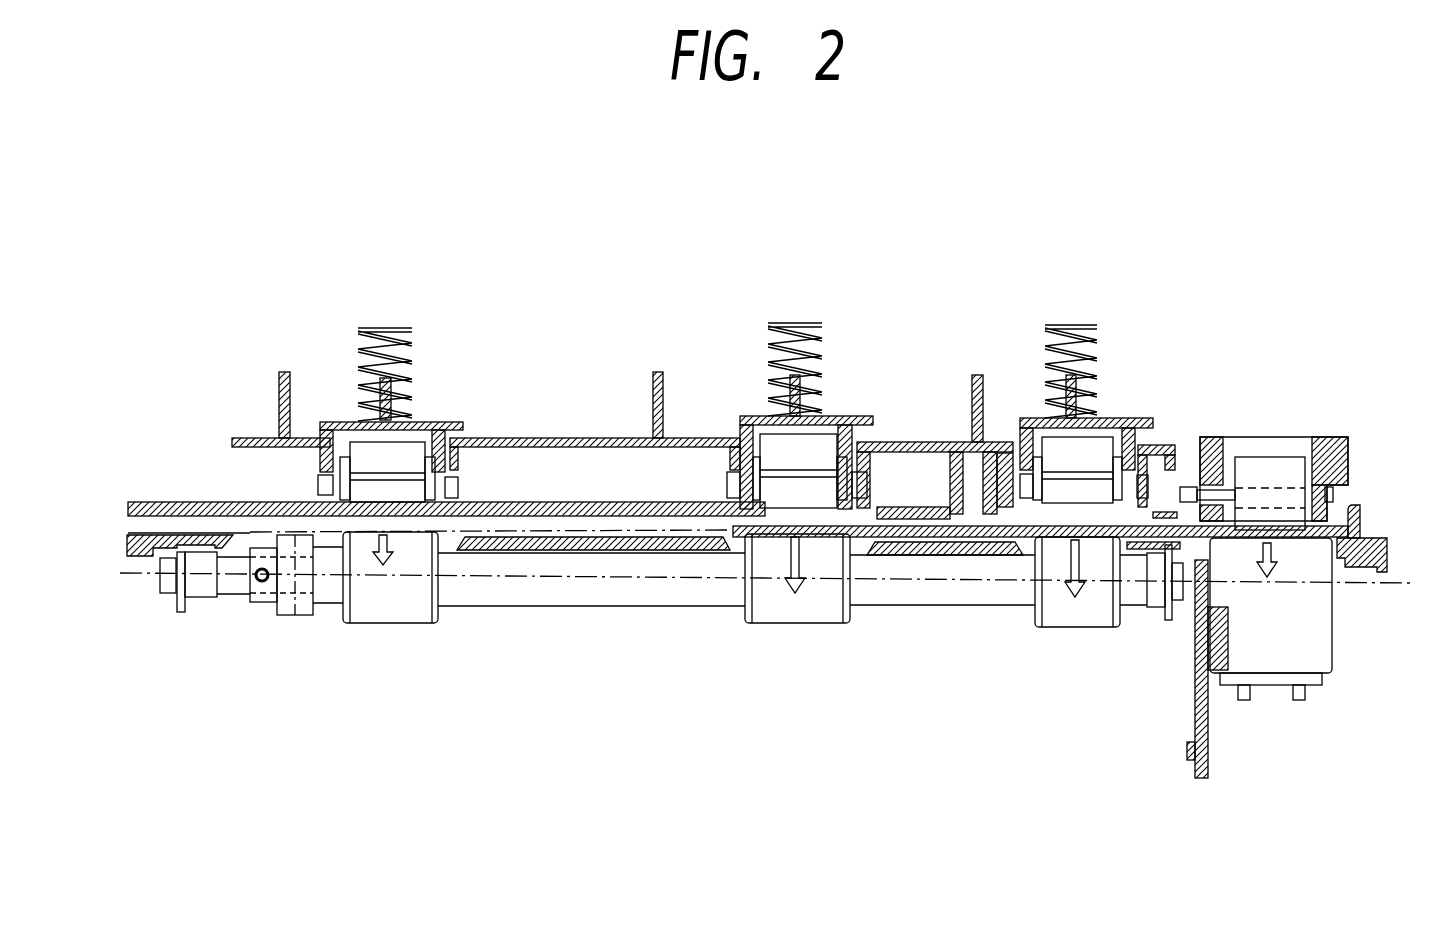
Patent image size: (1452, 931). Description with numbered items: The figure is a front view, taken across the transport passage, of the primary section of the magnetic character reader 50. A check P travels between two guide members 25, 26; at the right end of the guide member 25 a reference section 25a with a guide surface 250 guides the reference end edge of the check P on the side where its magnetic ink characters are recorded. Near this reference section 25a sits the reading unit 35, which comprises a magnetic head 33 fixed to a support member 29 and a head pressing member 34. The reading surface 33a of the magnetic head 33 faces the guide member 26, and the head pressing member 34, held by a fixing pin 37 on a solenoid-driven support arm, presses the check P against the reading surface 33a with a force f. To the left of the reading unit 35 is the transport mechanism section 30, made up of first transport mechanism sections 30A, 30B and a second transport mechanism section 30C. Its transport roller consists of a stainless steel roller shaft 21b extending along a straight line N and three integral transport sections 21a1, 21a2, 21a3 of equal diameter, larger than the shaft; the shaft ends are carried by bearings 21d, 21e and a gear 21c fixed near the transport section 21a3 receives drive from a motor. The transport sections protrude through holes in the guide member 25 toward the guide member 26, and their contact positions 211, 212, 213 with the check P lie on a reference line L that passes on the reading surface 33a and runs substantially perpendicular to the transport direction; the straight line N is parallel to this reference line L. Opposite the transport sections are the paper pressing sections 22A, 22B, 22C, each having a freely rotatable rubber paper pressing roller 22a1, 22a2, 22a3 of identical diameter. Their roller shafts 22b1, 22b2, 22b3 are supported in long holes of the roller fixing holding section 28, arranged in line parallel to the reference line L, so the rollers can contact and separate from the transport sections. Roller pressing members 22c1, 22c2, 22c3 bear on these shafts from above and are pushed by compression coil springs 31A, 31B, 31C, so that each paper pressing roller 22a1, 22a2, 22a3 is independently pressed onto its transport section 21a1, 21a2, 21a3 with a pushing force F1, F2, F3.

The magnetic character reader 50 is at (266, 194).
The paper pressing section 22A is at (1184, 258).
The paper pressing section 22B is at (906, 243).
The paper pressing section 22C is at (496, 252).
The paper pressing roller 22a1 is at (1105, 445).
The paper pressing roller 22a2 is at (820, 455).
The paper pressing roller 22a3 is at (415, 455).
The roller shaft 22b1 is at (1140, 475).
The roller shaft 22b2 is at (862, 472).
The roller shaft 22b3 is at (450, 472).
The roller pressing member 22c1 is at (1113, 418).
The roller pressing member 22c2 is at (833, 416).
The roller pressing member 22c3 is at (423, 430).
The compression coil spring 31A is at (1063, 325).
The compression coil spring 31B is at (790, 322).
The compression coil spring 31C is at (372, 326).
The roller fixing holding section 28 is at (232, 440).
The guide member 26 is at (140, 501).
The guide member 25 is at (138, 556).
The reference section 25a is at (1347, 583).
The check P is at (887, 540).
The guide surface 250 is at (1345, 507).
The roller shaft 21b is at (627, 607).
The transport section 21a1 is at (1097, 627).
The transport section 21a2 is at (833, 623).
The transport section 21a3 is at (390, 623).
The gear 21c is at (288, 605).
The bearing 21d is at (1150, 607).
The bearing 21e is at (197, 600).
The contact position 211 is at (1025, 560).
The contact position 212 is at (746, 600).
The contact position 213 is at (432, 555).
The pushing force F1 is at (1070, 590).
The pushing force F2 is at (792, 595).
The pushing force F3 is at (365, 566).
The pushing force f is at (1270, 590).
The reference line L is at (520, 532).
The straight line N is at (586, 580).
The support member 29 is at (1213, 727).
The magnetic head 33 is at (1247, 545).
The reading surface 33a is at (1293, 560).
The head pressing member 34 is at (1285, 457).
The reading unit 35 is at (1383, 322).
The fixing pin 37 is at (1350, 447).
The transport mechanism section 30 is at (1036, 782).
The first transport mechanism section 30A is at (1045, 700).
The first transport mechanism section 30B is at (787, 700).
The second transport mechanism section 30C is at (455, 700).